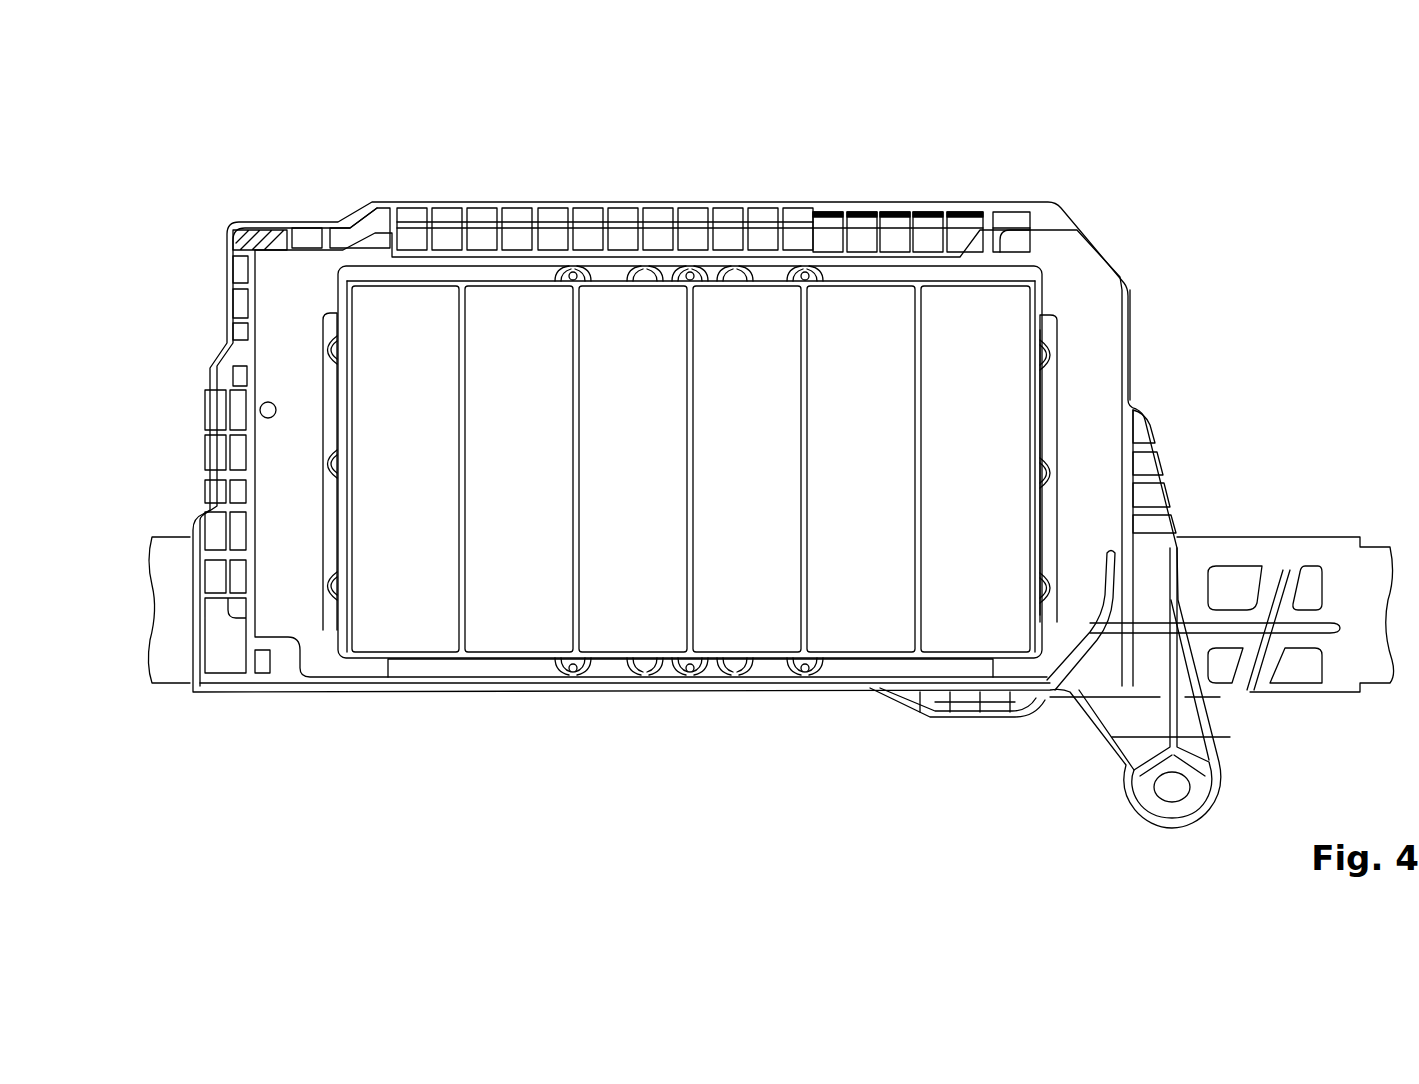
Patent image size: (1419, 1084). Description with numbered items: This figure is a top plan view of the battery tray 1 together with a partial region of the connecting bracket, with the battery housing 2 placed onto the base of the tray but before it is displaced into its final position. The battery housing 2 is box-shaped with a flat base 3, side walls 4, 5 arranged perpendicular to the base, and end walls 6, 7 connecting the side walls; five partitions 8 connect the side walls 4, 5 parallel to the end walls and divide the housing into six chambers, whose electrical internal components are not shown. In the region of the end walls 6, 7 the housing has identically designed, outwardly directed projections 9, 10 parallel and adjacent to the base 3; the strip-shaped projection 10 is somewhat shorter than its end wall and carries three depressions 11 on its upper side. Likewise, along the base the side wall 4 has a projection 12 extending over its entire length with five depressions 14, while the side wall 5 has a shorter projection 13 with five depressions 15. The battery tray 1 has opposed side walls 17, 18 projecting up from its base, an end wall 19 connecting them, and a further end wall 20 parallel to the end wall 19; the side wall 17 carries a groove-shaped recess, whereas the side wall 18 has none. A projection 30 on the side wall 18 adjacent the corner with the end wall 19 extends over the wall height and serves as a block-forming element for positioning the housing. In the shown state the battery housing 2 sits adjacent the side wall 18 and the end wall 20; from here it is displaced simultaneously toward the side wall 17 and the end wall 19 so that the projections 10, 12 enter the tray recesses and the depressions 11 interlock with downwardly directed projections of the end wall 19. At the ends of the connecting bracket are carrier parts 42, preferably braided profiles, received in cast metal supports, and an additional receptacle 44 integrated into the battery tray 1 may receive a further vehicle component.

The battery tray 1 is at (1212, 214).
The battery housing 2 is at (1064, 270).
The base 3 is at (487, 637).
The side wall 4 is at (513, 283).
The side wall 5 is at (430, 655).
The end wall 6 is at (1035, 330).
The end wall 7 is at (345, 385).
The partitions 8 is at (460, 615).
The projection 9 is at (1048, 393).
The projection 10 is at (330, 432).
The depressions 11 is at (335, 352).
The projection 12 is at (893, 280).
The projection 13 is at (458, 668).
The depressions 14 is at (575, 280).
The depressions 15 is at (573, 676).
The side wall 17 is at (982, 184).
The side wall 18 is at (362, 686).
The end wall 19 is at (212, 302).
The end wall 20 is at (1173, 460).
The projection 30 is at (275, 656).
The carrier parts 42 is at (163, 620).
The additional receptacle 44 is at (1125, 750).